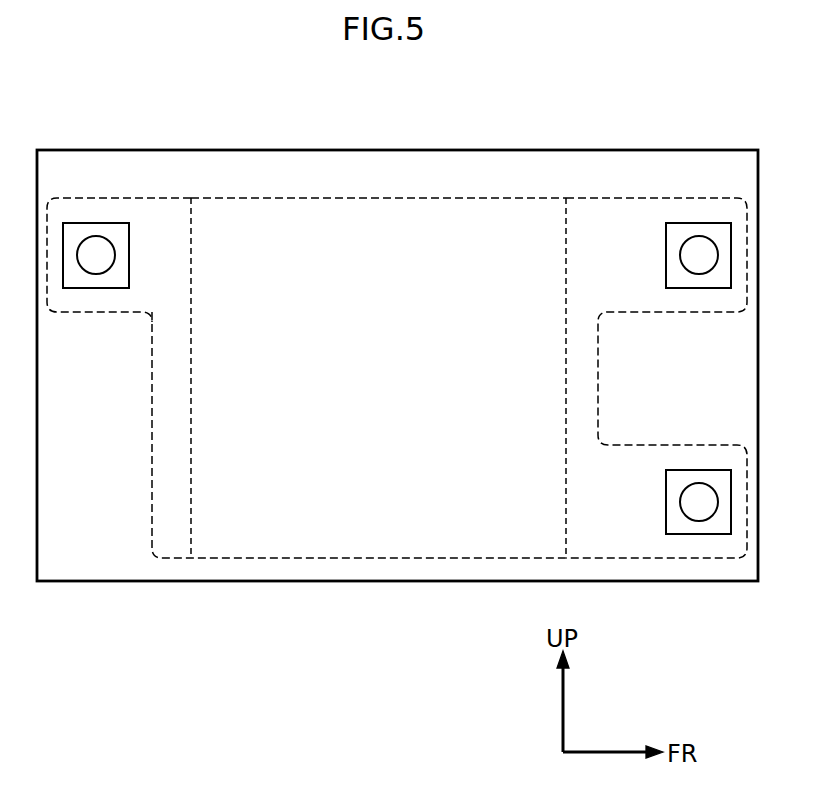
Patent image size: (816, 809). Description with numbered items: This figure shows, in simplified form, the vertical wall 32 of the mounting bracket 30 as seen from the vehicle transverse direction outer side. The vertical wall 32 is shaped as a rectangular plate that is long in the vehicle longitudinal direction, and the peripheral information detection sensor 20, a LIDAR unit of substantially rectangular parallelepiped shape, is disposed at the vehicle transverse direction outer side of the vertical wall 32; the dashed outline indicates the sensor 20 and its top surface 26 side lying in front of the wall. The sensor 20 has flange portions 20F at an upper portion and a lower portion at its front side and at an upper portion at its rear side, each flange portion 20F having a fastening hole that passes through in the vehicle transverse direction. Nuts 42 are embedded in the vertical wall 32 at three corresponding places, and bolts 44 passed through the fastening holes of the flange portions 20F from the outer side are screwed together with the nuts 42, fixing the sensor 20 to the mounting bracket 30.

The peripheral information detection sensor 20 is at (337, 228).
The flange portions 20F is at (112, 198).
The top surface 26 is at (290, 198).
The mounting bracket 30 is at (397, 343).
The vertical wall 32 is at (481, 172).
The nuts 42 is at (92, 290).
The bolts 44 is at (100, 250).